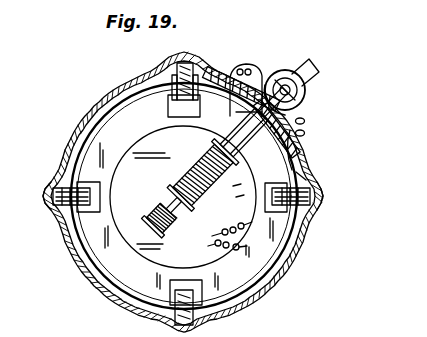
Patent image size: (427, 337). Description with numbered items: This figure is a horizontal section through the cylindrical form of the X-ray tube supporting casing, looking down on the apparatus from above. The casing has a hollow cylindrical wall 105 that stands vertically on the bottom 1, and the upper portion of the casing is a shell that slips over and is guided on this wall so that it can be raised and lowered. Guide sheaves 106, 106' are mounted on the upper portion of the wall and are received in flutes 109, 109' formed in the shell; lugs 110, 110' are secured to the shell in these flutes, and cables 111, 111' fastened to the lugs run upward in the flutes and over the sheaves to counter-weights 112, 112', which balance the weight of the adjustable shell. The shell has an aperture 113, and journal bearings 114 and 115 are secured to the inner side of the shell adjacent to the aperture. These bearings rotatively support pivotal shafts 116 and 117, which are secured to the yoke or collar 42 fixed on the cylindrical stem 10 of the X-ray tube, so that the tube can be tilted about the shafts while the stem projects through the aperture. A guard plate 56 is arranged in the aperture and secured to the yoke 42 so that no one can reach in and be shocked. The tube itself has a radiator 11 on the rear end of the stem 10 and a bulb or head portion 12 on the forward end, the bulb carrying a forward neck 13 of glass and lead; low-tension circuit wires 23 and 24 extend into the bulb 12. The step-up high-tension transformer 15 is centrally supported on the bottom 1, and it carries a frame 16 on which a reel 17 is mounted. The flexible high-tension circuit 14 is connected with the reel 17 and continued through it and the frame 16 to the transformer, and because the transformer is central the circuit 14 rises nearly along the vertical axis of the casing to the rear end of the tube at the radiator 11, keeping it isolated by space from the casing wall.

The bottom 1 is at (95, 130).
The cylindrical stem 10 is at (228, 146).
The radiator 11 is at (177, 178).
The bulb or head portion 12 is at (310, 92).
The forward neck 13 is at (318, 66).
The high-tension electrical circuit 14 is at (165, 198).
The step-up high-tension transformer 15 is at (105, 110).
The frame 16 is at (148, 211).
The reel 17 is at (154, 226).
The low-tension circuit wire 23 is at (258, 64).
The low-tension circuit wire 24 is at (310, 131).
The yoke or collar 42 is at (250, 190).
The guard plate 56 is at (152, 186).
The hollow cylindrical wall 105 is at (80, 141).
The guide sheave 106 is at (45, 182).
The flute 109 is at (61, 214).
The lug 110 is at (165, 196).
The cable 111 is at (52, 197).
The counter-weight 112 is at (163, 218).
The aperture 113 is at (300, 162).
The journal bearing 114 is at (207, 73).
The journal bearing 115 is at (336, 150).
The pivotal shaft 116 is at (172, 116).
The pivotal shaft 117 is at (262, 198).
The guide sheave 106' is at (338, 209).
The flute 109' is at (319, 198).
The lug 110' is at (331, 174).
The cable 111' is at (330, 190).
The counter-weight 112' is at (294, 243).